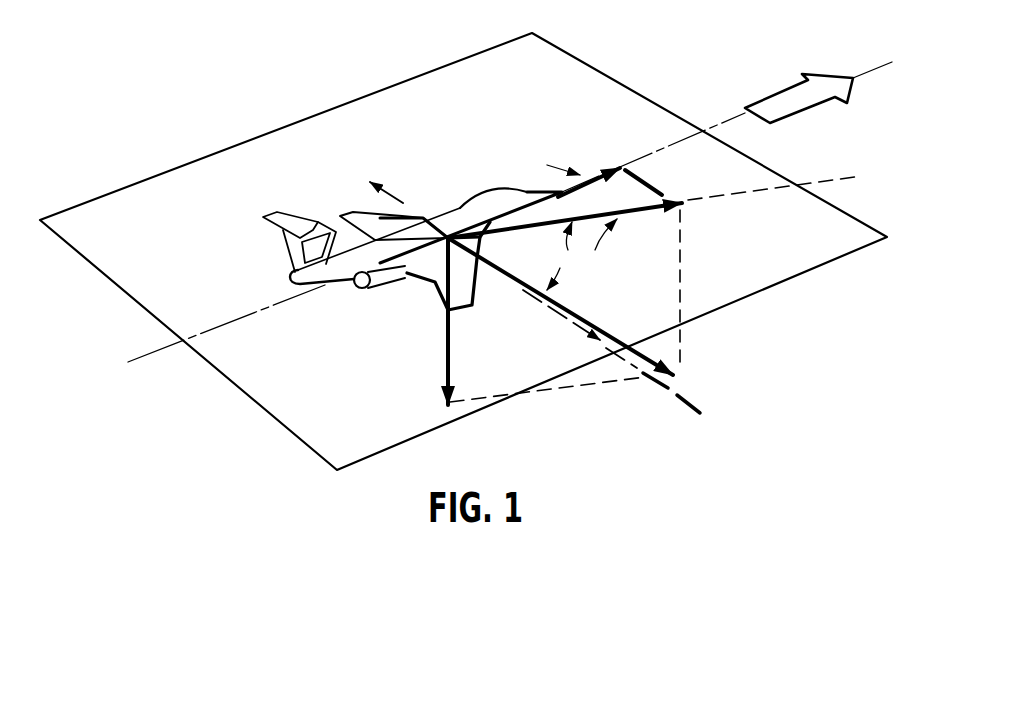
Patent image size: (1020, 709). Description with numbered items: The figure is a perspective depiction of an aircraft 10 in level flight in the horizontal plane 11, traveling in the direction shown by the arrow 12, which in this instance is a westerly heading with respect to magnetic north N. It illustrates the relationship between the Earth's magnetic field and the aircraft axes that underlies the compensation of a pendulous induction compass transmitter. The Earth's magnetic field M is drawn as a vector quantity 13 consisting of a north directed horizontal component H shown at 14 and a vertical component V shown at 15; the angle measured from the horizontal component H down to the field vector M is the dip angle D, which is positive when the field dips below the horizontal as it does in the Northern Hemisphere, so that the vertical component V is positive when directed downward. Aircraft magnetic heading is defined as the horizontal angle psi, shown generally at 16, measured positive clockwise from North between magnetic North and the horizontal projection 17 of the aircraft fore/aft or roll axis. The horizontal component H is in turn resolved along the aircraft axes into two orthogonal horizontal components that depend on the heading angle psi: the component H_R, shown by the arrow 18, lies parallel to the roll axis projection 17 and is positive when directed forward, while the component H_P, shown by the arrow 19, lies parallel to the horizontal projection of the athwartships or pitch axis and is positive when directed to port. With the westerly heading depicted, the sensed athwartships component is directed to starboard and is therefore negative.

The aircraft 10 is at (401, 287).
The horizontal plane 11 is at (552, 28).
The arrow showing direction of flight 12 is at (765, 103).
The Earth's magnetic field vector M 13 is at (567, 306).
The north directed horizontal component H 14 is at (641, 210).
The vertical component V 15 is at (447, 352).
The horizontal angle psi 16 is at (625, 193).
The horizontal projection of aircraft fore/aft or roll axis 17 is at (333, 286).
The arrow showing component H_R 18 is at (608, 172).
The arrow showing component H_P 19 is at (411, 212).